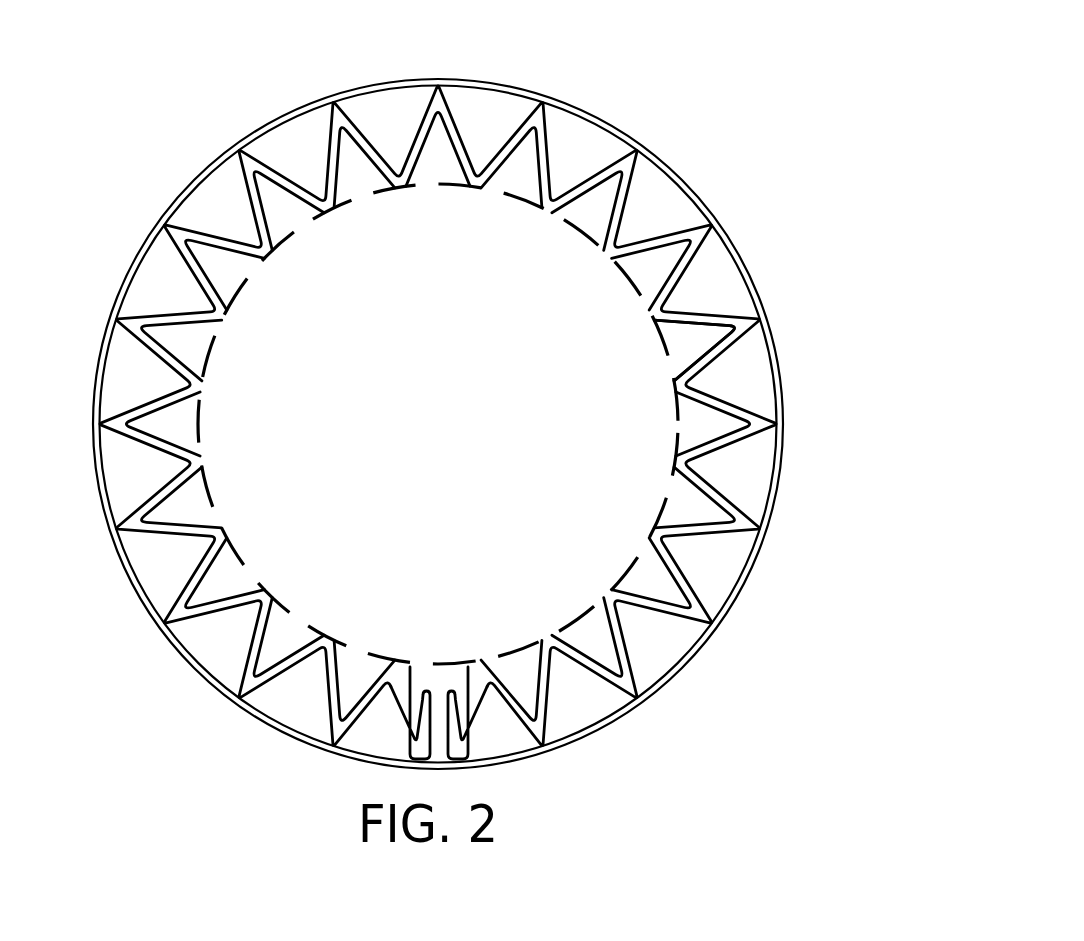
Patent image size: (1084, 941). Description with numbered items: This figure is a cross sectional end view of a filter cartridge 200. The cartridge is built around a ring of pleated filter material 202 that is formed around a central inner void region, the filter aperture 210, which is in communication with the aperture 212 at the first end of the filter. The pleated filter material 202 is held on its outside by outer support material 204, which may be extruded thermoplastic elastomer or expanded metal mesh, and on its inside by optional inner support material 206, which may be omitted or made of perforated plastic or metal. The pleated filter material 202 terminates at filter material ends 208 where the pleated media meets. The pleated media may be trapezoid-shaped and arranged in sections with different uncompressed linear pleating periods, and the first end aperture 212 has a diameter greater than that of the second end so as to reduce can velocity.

The filter cartridge 200 is at (503, 387).
The pleated filter material 202 is at (245, 203).
The outer support material 204 is at (664, 168).
The inner support material 206 is at (667, 355).
The filter material ends 208 is at (438, 689).
The filter aperture 210 is at (365, 423).
The aperture 212 is at (678, 430).